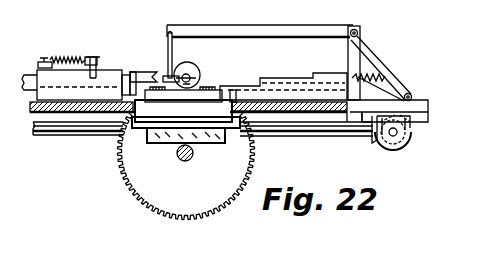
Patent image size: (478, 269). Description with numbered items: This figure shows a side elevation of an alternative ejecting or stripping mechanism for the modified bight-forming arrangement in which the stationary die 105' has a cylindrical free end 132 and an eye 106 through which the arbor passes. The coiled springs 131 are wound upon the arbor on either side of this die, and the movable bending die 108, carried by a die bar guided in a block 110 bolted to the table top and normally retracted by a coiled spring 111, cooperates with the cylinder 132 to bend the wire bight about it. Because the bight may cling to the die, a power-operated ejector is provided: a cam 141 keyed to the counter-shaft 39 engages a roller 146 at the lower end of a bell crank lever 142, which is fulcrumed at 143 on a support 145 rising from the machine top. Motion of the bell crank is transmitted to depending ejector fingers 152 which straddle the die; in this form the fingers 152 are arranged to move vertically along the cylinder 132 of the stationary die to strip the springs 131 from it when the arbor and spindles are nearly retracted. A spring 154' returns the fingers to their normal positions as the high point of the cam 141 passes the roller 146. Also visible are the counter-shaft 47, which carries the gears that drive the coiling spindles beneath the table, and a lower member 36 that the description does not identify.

The base rail 36 is at (67, 140).
The counter-shaft 39 is at (405, 122).
The counter-shaft 47 is at (185, 162).
The stationary die 105' is at (283, 79).
The eye 106 is at (192, 66).
The movable bending die 108 is at (147, 65).
The block 110 is at (99, 77).
The coiled spring 111 is at (74, 55).
The springs 131 is at (165, 141).
The cylindrical free end 132 is at (183, 104).
The cam 141 is at (387, 154).
The bell crank lever 142 is at (293, 25).
The fulcrum 143 is at (367, 23).
The support 145 is at (348, 58).
The roller 146 is at (411, 99).
The ejector fingers 152 is at (166, 50).
The spring 154' is at (368, 85).